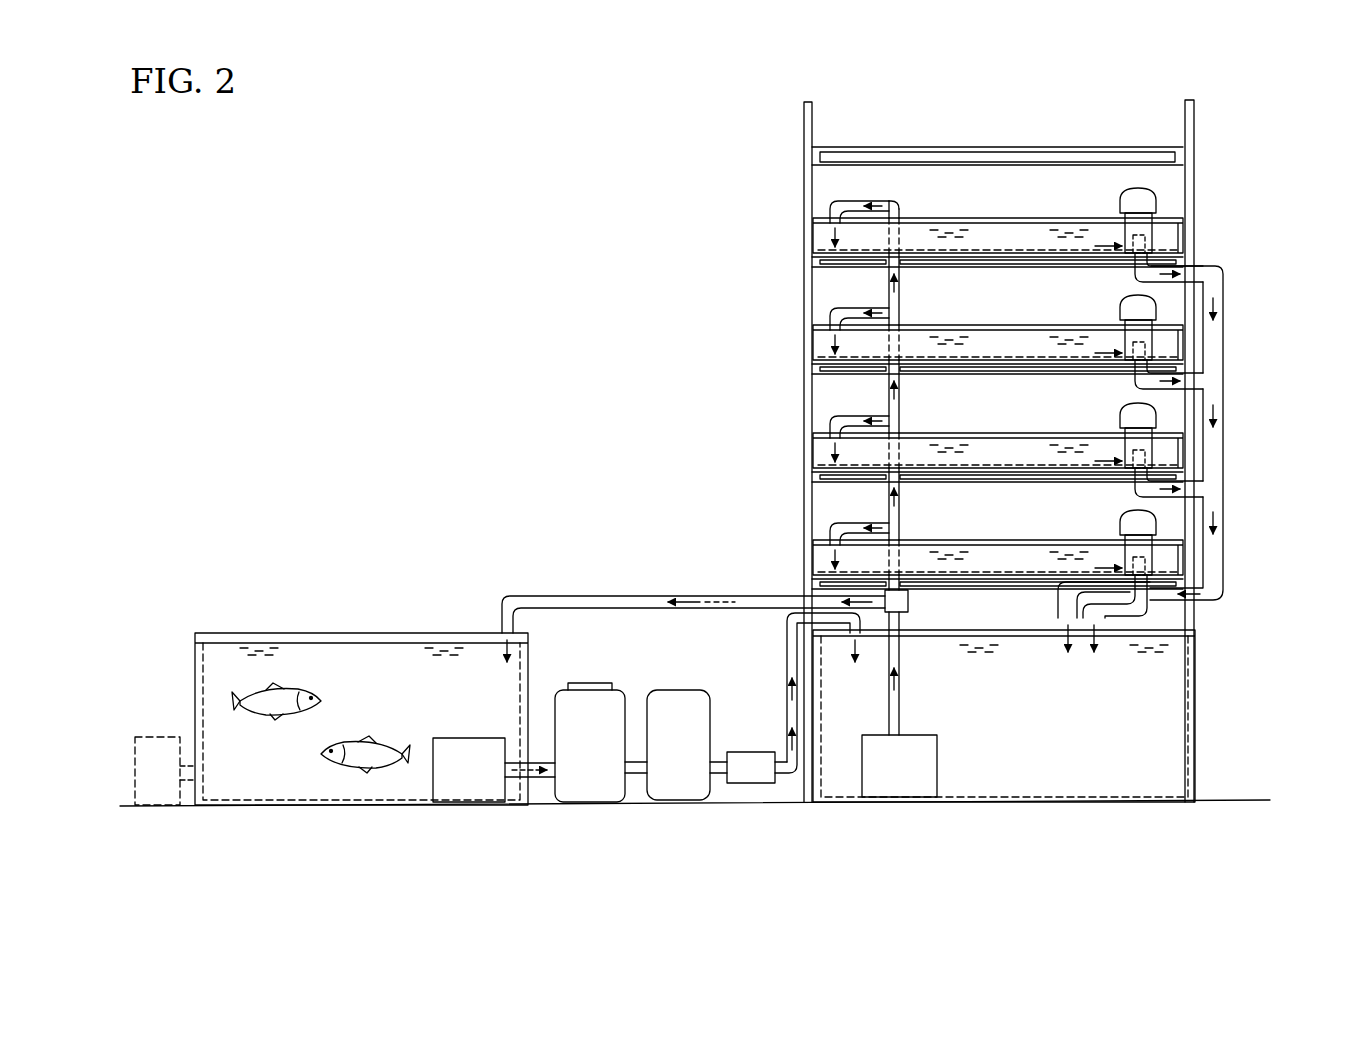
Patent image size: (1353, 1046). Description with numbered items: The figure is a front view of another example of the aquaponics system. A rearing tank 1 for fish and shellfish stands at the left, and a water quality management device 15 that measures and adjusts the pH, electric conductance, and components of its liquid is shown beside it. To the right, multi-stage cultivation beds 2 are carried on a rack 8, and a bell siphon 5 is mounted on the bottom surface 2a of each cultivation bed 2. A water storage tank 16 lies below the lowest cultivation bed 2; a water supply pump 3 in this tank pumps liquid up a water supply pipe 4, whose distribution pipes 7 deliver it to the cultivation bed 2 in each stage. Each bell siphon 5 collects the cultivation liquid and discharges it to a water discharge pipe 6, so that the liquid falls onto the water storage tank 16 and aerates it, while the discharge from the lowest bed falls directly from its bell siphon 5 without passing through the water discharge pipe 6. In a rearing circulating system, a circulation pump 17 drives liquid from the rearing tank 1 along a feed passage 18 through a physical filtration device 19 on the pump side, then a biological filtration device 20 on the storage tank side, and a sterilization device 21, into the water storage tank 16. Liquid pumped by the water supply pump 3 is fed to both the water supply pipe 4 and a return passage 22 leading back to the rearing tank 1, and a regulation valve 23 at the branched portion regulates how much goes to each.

The rearing tank 1 is at (277, 790).
The cultivation bed 2 is at (812, 236).
The bottom surface 2a is at (1015, 270).
The water supply pump 3 is at (899, 766).
The water supply pipe 4 is at (905, 680).
The bell siphon 5 is at (1124, 193).
The water discharge pipe 6 is at (1224, 350).
The distribution pipe 7 is at (830, 206).
The rack 8 is at (805, 119).
The water quality management device 15 is at (165, 771).
The water storage tank 16 is at (1017, 785).
The circulation pump 17 is at (469, 770).
The feed passage 18 is at (546, 784).
The physical filtration device 19 is at (590, 742).
The biological filtration device 20 is at (678, 745).
The sterilization device 21 is at (753, 760).
The return passage 22 is at (607, 592).
The regulation valve 23 is at (910, 603).